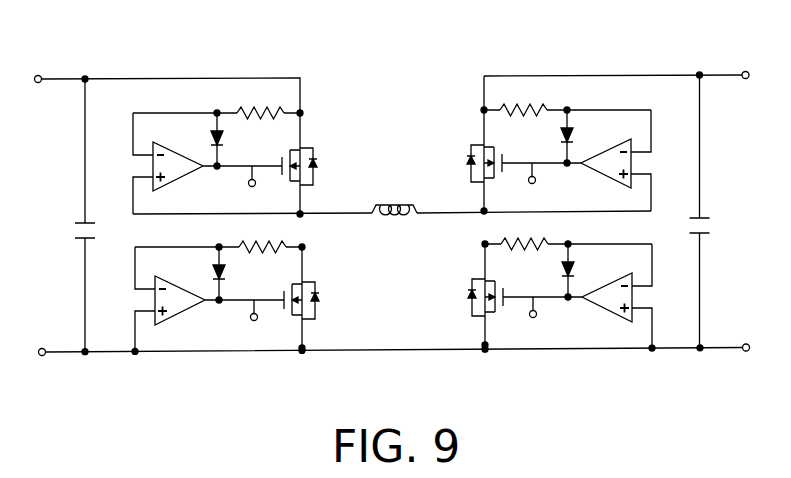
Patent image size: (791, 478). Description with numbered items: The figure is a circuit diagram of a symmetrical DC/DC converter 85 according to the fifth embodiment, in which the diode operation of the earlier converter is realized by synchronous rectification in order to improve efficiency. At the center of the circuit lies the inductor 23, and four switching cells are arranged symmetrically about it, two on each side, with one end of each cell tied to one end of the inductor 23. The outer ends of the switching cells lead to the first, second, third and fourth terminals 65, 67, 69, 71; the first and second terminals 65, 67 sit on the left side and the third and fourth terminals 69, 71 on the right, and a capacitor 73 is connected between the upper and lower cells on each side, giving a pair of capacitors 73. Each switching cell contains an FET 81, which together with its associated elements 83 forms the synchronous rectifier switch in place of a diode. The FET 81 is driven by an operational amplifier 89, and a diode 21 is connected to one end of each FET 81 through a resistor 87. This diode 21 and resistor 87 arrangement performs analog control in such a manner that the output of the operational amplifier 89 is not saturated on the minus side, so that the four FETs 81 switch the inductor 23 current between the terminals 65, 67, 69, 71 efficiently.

The diode 21 is at (209, 138).
The inductor 23 is at (394, 197).
The first terminal 65 is at (38, 75).
The second terminal 67 is at (42, 356).
The third terminal 69 is at (744, 71).
The fourth terminal 71 is at (746, 351).
The capacitor 73 is at (74, 228).
The FET 81 is at (318, 150).
The MOSFET switch 83 is at (285, 150).
The symmetrical DC/DC converter 85 is at (397, 98).
The resistor 87 is at (258, 103).
The operational amplifier 89 is at (135, 167).